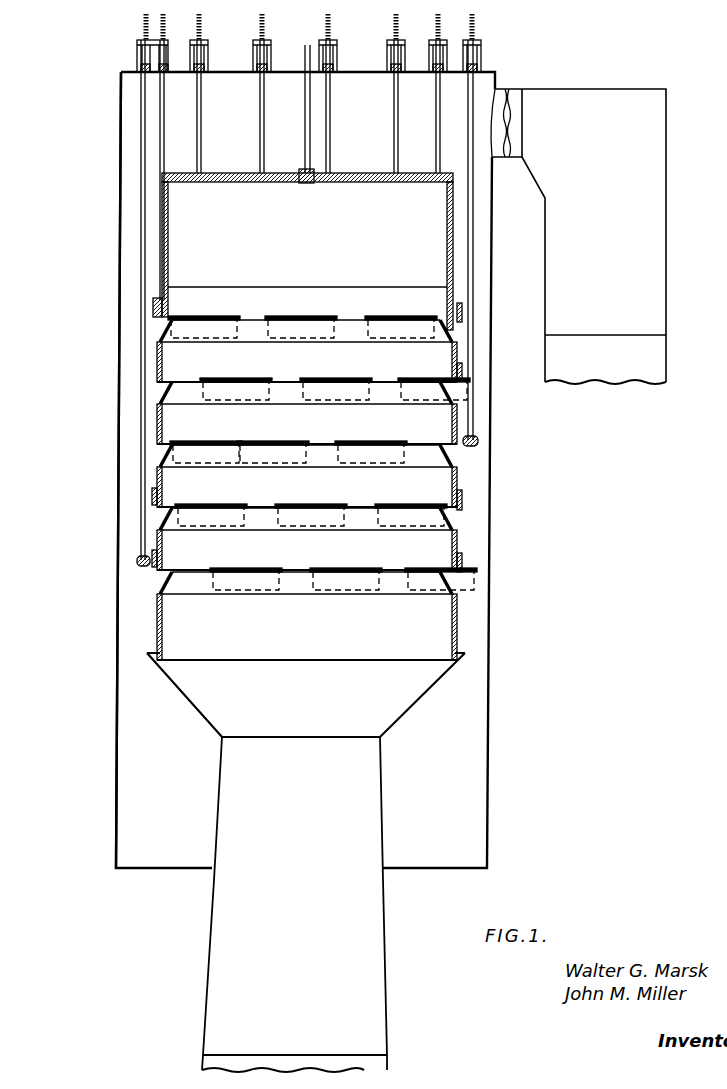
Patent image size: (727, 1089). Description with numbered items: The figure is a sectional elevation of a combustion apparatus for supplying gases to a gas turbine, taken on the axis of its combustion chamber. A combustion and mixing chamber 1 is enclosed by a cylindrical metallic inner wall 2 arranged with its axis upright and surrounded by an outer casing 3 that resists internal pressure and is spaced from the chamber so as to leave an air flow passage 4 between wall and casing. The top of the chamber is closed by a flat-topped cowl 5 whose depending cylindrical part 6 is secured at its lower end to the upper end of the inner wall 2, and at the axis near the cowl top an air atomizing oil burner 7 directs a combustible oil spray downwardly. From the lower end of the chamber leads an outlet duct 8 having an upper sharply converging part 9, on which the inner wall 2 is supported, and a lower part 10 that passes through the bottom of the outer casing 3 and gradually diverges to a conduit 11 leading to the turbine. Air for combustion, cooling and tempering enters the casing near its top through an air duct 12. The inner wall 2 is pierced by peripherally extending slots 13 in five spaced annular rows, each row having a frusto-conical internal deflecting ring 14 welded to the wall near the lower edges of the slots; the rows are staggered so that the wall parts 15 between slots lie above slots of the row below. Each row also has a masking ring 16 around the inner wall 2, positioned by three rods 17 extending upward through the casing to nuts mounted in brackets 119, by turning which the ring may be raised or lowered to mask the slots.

The combustion and mixing chamber 1 is at (190, 424).
The cylindrical metallic inner wall 2 is at (158, 472).
The outer casing 3 is at (118, 508).
The air flow passage 4 is at (128, 306).
The flat-topped cowl 5 is at (185, 177).
The depending cylindrical part 6 is at (162, 214).
The air atomizing oil burner 7 is at (305, 183).
The outlet duct 8 is at (230, 766).
The upper sharply converging part 9 is at (185, 680).
The lower part 10 is at (208, 905).
The conduit 11 is at (208, 1061).
The air duct 12 is at (568, 98).
The peripherally extending slots 13 is at (333, 320).
The internal deflecting ring 14 is at (448, 395).
The wall parts 15 is at (250, 318).
The masking ring 16 is at (460, 372).
The rods 17 is at (143, 247).
The brackets 119 is at (254, 43).